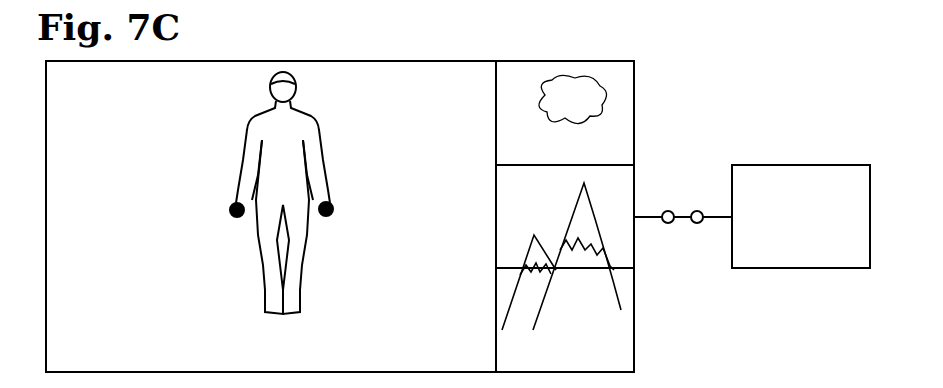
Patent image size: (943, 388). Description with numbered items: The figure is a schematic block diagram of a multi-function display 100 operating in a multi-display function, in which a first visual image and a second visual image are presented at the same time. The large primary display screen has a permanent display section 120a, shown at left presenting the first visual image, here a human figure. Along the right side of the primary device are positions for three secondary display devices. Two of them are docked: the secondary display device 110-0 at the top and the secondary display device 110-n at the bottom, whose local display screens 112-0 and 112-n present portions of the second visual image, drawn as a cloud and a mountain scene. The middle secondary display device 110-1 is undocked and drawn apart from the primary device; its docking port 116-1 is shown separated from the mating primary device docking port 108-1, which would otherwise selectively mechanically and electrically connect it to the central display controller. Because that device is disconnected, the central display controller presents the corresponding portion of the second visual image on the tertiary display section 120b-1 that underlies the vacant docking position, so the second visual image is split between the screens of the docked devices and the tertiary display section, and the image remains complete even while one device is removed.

The multi-function display 100 is at (247, 52).
The permanent display section 120a is at (271, 216).
The tertiary display section 120b-1 is at (625, 186).
The secondary display device 110-0 is at (636, 130).
The secondary display device 110-1 is at (801, 216).
The secondary display device 110-n is at (636, 321).
The local display screen 112-0 is at (618, 108).
The local display screen 112-n is at (612, 315).
The docking port 108-1 is at (640, 216).
The docking port 116-1 is at (722, 220).